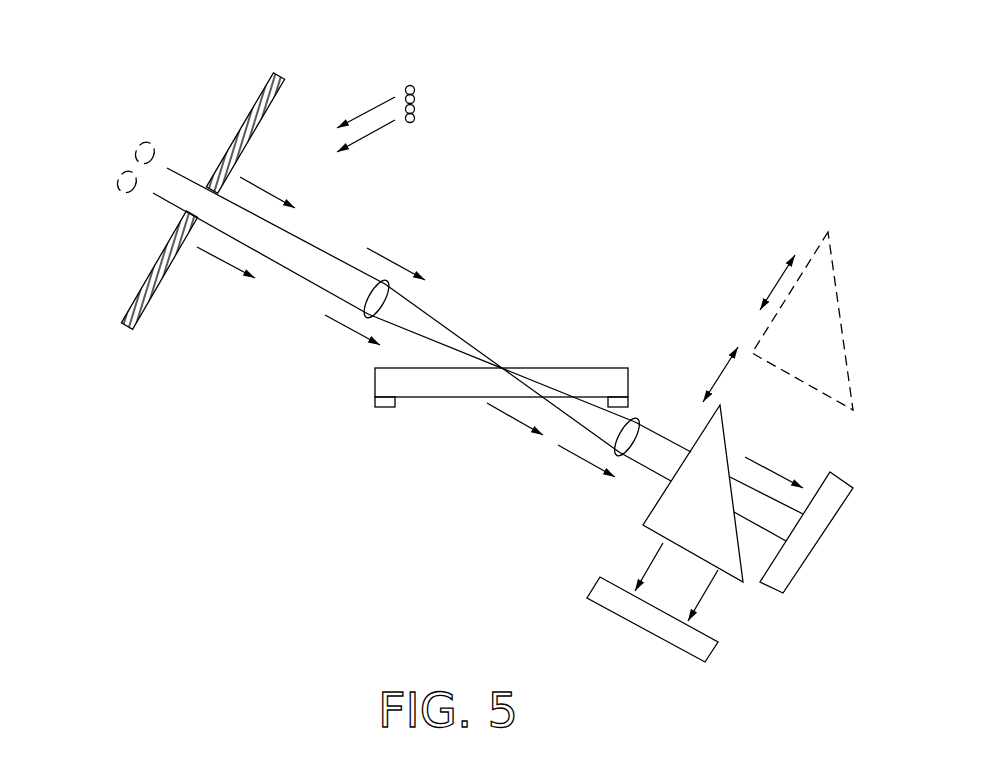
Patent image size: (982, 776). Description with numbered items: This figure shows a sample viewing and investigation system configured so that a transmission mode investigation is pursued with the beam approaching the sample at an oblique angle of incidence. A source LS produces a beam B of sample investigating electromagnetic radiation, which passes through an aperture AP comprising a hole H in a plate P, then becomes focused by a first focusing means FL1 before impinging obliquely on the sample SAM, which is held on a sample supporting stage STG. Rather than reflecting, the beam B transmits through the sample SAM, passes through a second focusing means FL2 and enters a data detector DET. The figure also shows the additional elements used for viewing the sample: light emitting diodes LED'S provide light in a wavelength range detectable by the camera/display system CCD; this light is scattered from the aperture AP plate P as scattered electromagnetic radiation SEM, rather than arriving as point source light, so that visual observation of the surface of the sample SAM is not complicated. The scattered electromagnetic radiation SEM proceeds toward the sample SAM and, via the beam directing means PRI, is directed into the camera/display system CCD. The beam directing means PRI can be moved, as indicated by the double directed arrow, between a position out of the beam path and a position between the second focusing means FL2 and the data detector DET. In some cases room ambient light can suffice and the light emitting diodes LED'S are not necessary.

The aperture AP is at (295, 60).
The plate P is at (132, 293).
The source LS is at (123, 145).
The hole H is at (210, 202).
The beam B is at (178, 196).
The light emitting diodes LED'S is at (441, 106).
The scattered electromagnetic radiation SEM is at (327, 328).
The first focusing means FL1 is at (397, 290).
The second focusing means FL2 is at (643, 413).
The sample SAM is at (488, 392).
The sample supporting stage STG is at (633, 393).
The beam directing means PRI is at (735, 445).
The camera/display system CCD is at (590, 577).
The data detector DET is at (797, 590).